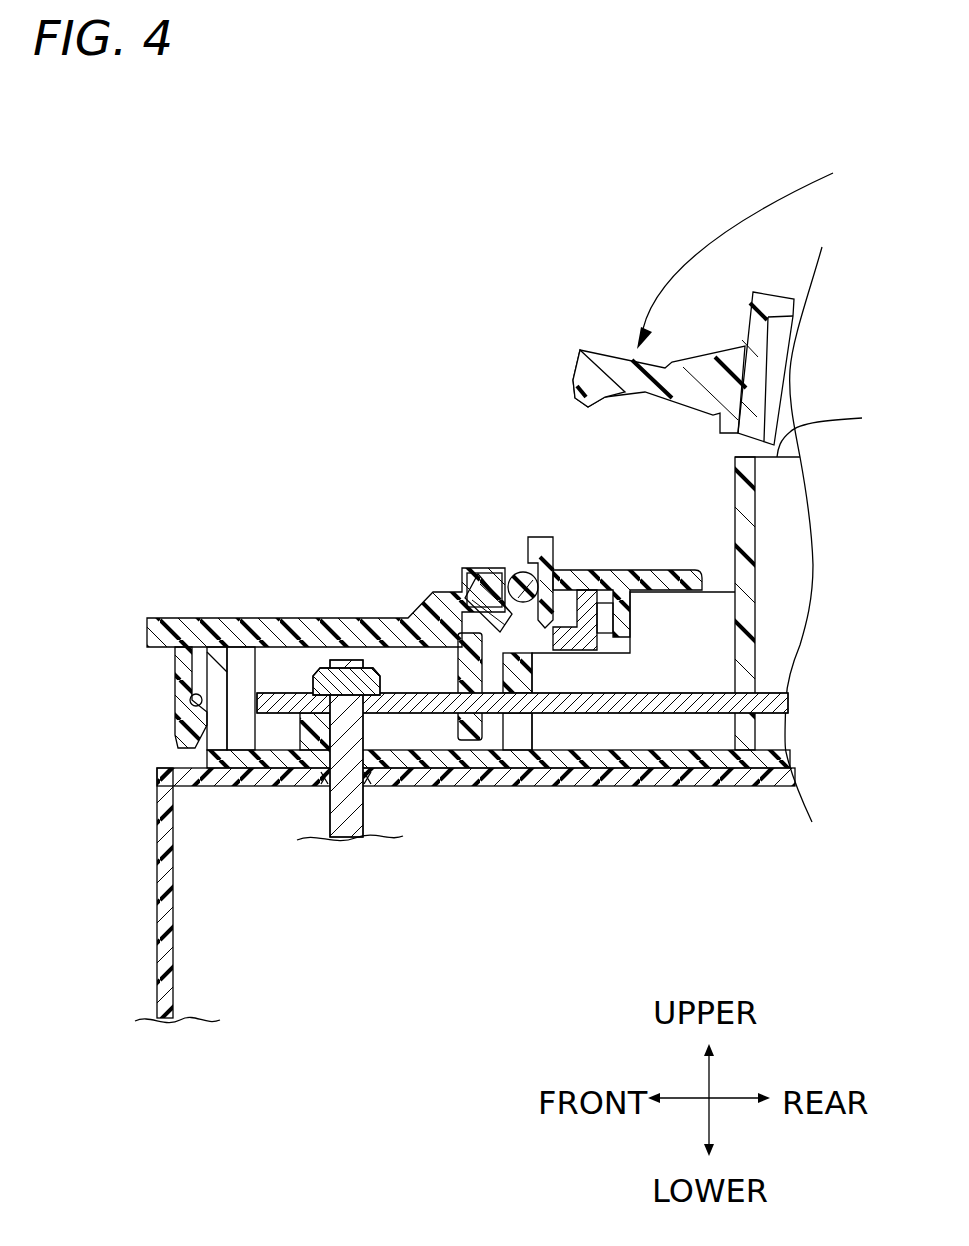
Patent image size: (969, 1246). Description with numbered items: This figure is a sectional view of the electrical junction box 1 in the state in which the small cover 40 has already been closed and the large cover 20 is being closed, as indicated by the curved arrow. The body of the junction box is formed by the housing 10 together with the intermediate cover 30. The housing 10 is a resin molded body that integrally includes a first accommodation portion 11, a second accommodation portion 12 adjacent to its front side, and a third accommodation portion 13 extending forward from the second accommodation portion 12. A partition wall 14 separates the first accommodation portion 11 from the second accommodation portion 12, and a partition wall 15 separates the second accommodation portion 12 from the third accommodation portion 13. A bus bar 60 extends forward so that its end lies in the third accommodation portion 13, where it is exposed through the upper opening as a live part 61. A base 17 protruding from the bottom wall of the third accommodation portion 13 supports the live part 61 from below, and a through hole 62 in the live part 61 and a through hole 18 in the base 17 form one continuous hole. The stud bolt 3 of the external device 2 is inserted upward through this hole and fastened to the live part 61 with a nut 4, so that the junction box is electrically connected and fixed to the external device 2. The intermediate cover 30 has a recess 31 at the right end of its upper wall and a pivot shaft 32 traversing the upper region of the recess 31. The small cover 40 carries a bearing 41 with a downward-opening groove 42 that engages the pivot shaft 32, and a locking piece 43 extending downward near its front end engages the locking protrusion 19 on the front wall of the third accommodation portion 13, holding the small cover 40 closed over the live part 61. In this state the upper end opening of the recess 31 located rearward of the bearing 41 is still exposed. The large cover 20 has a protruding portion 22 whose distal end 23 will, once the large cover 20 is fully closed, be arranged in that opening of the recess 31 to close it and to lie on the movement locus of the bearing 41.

The electrical junction box 1 is at (224, 340).
The external device 2 is at (148, 900).
The stud bolt 3 is at (378, 808).
The nut 4 is at (307, 658).
The housing 10 is at (688, 784).
The first accommodation portion 11 is at (790, 450).
The second accommodation portion 12 is at (713, 557).
The third accommodation portion 13 is at (267, 693).
The partition wall 14 is at (737, 460).
The partition wall 15 is at (528, 668).
The base 17 is at (312, 742).
The through hole 18 is at (343, 740).
The locking protrusion 19 is at (190, 697).
The large cover 20 is at (782, 282).
The protruding portion 22 is at (664, 370).
The distal end 23 is at (593, 357).
The intermediate cover 30 is at (648, 550).
The recess 31 is at (573, 562).
The pivot shaft 32 is at (540, 545).
The small cover 40 is at (328, 606).
The bearing 41 is at (512, 578).
The groove 42 is at (510, 617).
The locking piece 43 is at (188, 730).
The bus bar 60 is at (600, 726).
The live part 61 is at (257, 693).
The through hole 62 is at (354, 700).